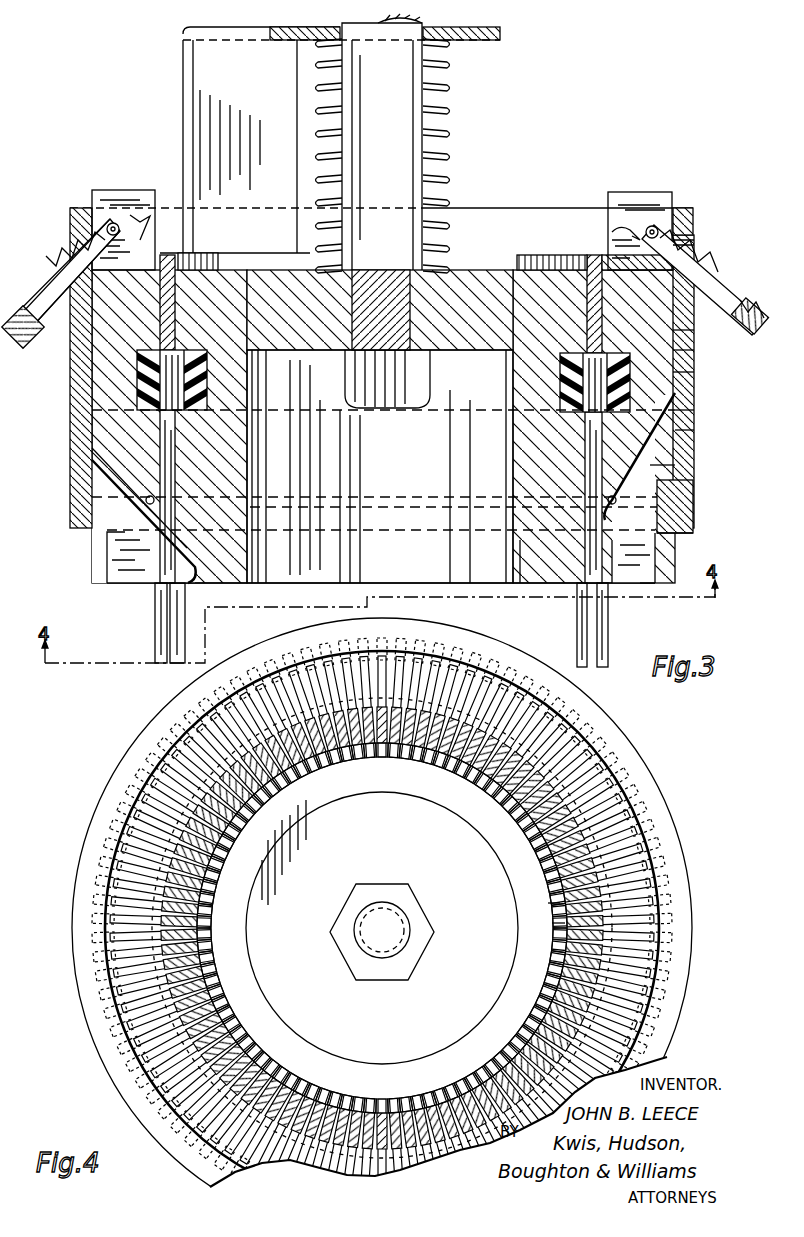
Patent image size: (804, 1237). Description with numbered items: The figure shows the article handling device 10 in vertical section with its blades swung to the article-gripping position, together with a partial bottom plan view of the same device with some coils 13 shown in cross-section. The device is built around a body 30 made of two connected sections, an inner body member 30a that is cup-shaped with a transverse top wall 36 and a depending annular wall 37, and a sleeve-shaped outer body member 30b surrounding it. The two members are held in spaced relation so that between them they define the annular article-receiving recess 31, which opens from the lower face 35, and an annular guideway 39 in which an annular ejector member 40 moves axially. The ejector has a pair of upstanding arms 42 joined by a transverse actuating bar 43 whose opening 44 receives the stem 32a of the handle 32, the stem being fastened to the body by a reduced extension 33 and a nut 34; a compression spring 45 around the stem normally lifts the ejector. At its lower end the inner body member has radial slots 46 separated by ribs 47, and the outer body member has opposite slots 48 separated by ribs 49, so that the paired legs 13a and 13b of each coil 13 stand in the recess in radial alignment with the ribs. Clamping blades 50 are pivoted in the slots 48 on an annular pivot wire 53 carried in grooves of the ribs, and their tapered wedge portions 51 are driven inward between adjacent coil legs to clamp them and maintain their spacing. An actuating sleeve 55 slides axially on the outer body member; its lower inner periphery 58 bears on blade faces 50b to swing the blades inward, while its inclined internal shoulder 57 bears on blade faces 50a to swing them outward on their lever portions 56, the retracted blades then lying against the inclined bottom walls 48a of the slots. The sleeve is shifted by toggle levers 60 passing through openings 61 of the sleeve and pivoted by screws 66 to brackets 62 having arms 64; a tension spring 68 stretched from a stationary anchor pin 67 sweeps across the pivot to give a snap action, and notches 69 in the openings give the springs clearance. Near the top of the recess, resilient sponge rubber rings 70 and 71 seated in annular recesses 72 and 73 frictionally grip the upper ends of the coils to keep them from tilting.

In FIG. 3, the article handling device 10 is at (68, 413).
In FIG. 4, the article handling device 10 is at (648, 752).
In FIG. 3, the coil 13 is at (585, 445).
In FIG. 4, the coil 13 is at (632, 820).
In FIG. 3, the coil leg 13a is at (580, 640).
In FIG. 4, the coil leg 13a is at (540, 840).
In FIG. 3, the coil leg 13b is at (606, 626).
In FIG. 4, the coil leg 13b is at (610, 798).
In FIG. 3, the body 30 is at (516, 285).
In FIG. 3, the inner body member 30a is at (470, 285).
In FIG. 4, the inner body member 30a is at (518, 895).
In FIG. 3, the outer body member 30b is at (694, 376).
In FIG. 3, the article-receiving recess 31 is at (694, 398).
In FIG. 3, the handle 32 is at (430, 62).
In FIG. 3, the stem 32a is at (415, 120).
In FIG. 3, the reduced extension 33 is at (410, 300).
In FIG. 4, the reduced extension 33 is at (408, 925).
In FIG. 3, the nut 34 is at (345, 385).
In FIG. 4, the nut 34 is at (420, 942).
In FIG. 3, the lower face 35 is at (522, 598).
In FIG. 3, the top wall 36 is at (262, 300).
In FIG. 3, the annular wall 37 is at (270, 470).
In FIG. 3, the annular guideway 39 is at (588, 300).
In FIG. 3, the ejector member 40 is at (590, 325).
In FIG. 3, the ejector arm 42 is at (183, 108).
In FIG. 3, the actuating bar 43 is at (310, 38).
In FIG. 3, the opening 44 is at (330, 44).
In FIG. 3, the compression spring 45 is at (450, 150).
In FIG. 3, the radial slot 46 is at (583, 588).
In FIG. 4, the radial slot 46 is at (553, 924).
In FIG. 4, the rib 47 is at (550, 904).
In FIG. 3, the slot 48 is at (660, 447).
In FIG. 4, the slot 48 is at (652, 893).
In FIG. 3, the inclined bottom wall 48a is at (694, 413).
In FIG. 4, the rib 49 is at (668, 852).
In FIG. 3, the clamping blade 50 is at (107, 556).
In FIG. 4, the clamping blade 50 is at (626, 905).
In FIG. 3, the inclined side face 50a is at (704, 484).
In FIG. 3, the side face 50b is at (656, 585).
In FIG. 3, the tapered wedge portion 51 is at (525, 560).
In FIG. 3, the annular pivot wire 53 is at (650, 545).
In FIG. 4, the annular pivot wire 53 is at (620, 921).
In FIG. 3, the actuating sleeve 55 is at (676, 430).
In FIG. 4, the actuating sleeve 55 is at (662, 872).
In FIG. 3, the lever portion 56 is at (652, 465).
In FIG. 3, the inclined internal shoulder 57 is at (693, 508).
In FIG. 3, the inner periphery 58 is at (693, 522).
In FIG. 3, the toggle lever 60 is at (712, 285).
In FIG. 3, the opening 61 is at (694, 246).
In FIG. 3, the bracket 62 is at (602, 262).
In FIG. 3, the bracket arm 64 is at (655, 196).
In FIG. 3, the pivot screw 66 is at (656, 228).
In FIG. 3, the stationary anchor pin 67 is at (622, 228).
In FIG. 3, the tension spring 68 is at (740, 300).
In FIG. 3, the notch 69 is at (692, 220).
In FIG. 3, the resilient ring 70 is at (562, 395).
In FIG. 3, the resilient ring 71 is at (694, 355).
In FIG. 3, the annular recess 72 is at (560, 375).
In FIG. 3, the annular recess 73 is at (694, 335).